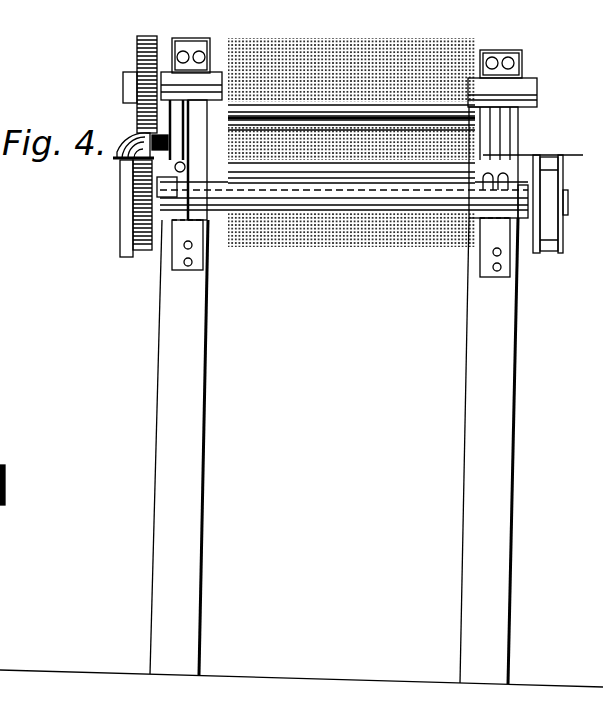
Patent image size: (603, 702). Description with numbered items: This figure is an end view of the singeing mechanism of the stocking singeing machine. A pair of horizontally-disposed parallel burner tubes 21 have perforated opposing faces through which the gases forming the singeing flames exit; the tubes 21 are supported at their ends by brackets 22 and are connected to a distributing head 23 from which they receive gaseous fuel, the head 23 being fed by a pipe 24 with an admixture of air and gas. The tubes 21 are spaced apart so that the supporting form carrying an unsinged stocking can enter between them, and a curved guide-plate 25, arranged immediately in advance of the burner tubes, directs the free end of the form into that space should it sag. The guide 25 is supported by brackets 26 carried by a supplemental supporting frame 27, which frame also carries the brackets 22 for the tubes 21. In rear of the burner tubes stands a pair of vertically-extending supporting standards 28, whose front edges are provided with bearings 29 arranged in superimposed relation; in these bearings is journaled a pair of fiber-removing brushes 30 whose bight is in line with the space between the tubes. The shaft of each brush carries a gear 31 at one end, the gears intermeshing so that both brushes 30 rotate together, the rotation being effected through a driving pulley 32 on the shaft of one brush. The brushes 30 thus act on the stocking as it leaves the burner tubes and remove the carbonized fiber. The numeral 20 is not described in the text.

The frame member 20 is at (543, 156).
The burner tubes 21 is at (346, 130).
The brackets 22 is at (197, 168).
The distributing head 23 is at (152, 136).
The pipe 24 is at (127, 180).
The curved guide-plate 25 is at (358, 200).
The brackets 26 is at (200, 243).
The supplemental supporting frame 27 is at (192, 430).
The supporting standards 28 is at (178, 38).
The bearings 29 is at (185, 77).
The fiber-removing brushes 30 is at (355, 43).
The gear 31 is at (136, 60).
The driving pulley 32 is at (553, 180).